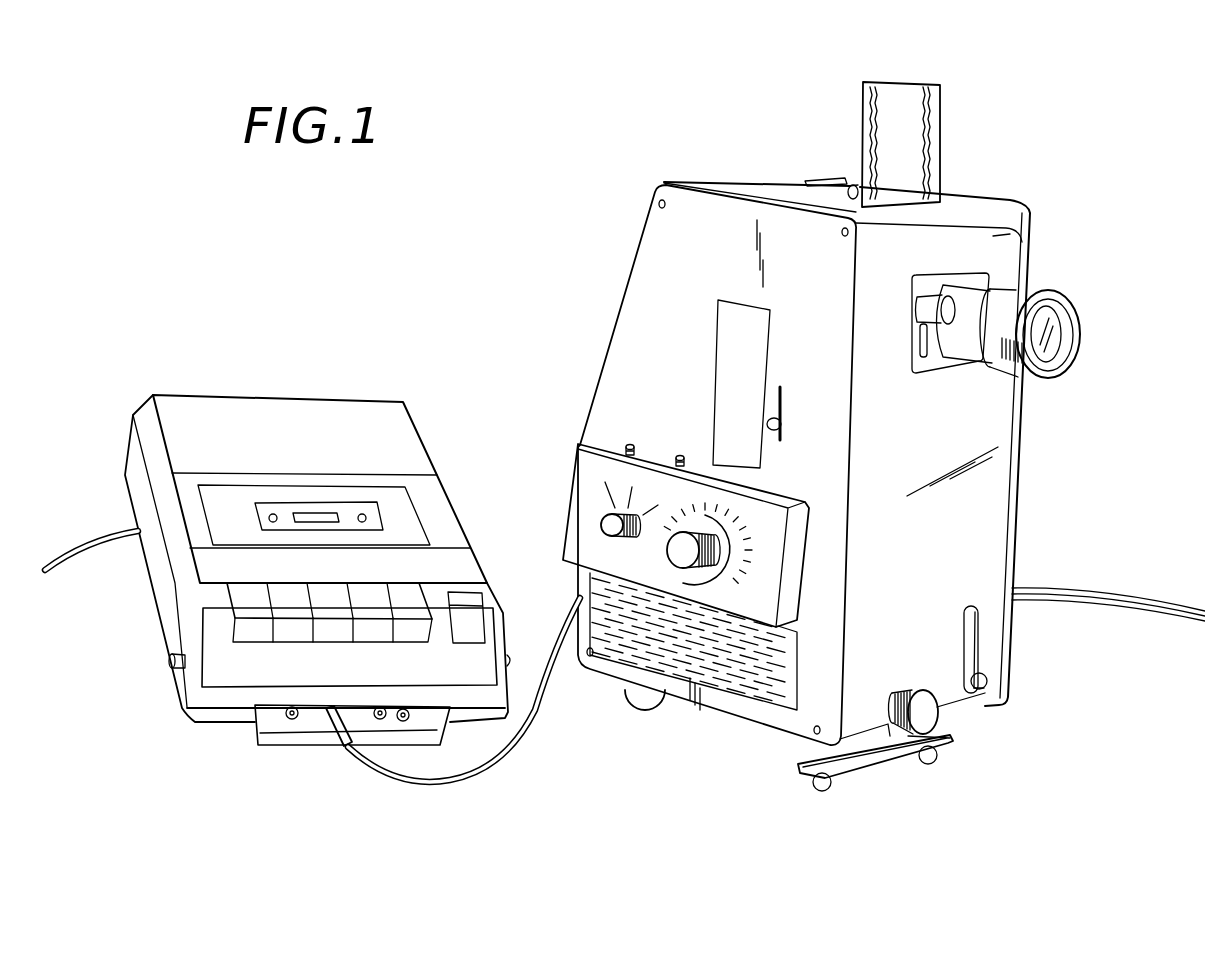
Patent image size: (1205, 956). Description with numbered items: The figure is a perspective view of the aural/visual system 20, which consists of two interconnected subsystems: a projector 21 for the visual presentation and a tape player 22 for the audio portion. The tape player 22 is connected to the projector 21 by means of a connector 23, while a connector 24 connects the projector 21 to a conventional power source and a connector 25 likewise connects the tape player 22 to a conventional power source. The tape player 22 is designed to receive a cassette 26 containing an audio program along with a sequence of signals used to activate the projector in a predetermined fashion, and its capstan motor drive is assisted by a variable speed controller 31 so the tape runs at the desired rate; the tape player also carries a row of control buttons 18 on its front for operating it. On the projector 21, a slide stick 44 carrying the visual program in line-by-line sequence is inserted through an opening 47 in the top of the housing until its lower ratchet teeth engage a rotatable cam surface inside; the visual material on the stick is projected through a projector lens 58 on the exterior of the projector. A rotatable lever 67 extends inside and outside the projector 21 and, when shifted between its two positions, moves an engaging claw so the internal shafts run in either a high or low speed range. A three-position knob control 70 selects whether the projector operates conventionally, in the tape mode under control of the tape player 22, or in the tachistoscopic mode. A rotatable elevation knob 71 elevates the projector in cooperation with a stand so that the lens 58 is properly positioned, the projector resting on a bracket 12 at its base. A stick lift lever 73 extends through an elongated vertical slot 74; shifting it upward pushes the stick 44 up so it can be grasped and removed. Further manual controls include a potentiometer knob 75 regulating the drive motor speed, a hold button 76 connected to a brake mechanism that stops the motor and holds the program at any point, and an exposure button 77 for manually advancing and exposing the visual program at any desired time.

The mounting bracket 12 is at (880, 755).
The control buttons 18 is at (398, 598).
The aural/visual system 20 is at (540, 302).
The projector 21 is at (1052, 505).
The tape player 22 is at (437, 453).
The connector 23 is at (515, 750).
The connector 24 is at (1116, 556).
The connector 25 is at (90, 549).
The cassette 26 is at (287, 506).
The variable speed controller 31 is at (539, 592).
The slide stick 44 is at (947, 125).
The opening 47 is at (922, 193).
The projector lens 58 is at (1045, 292).
The rotatable lever 67 is at (763, 438).
The knob control 70 is at (604, 522).
The elevation knob 71 is at (917, 687).
The stick lift lever 73 is at (978, 692).
The elongated vertical slot 74 is at (985, 583).
The potentiometer knob 75 is at (724, 576).
The hold button 76 is at (632, 445).
The exposure button 77 is at (683, 456).